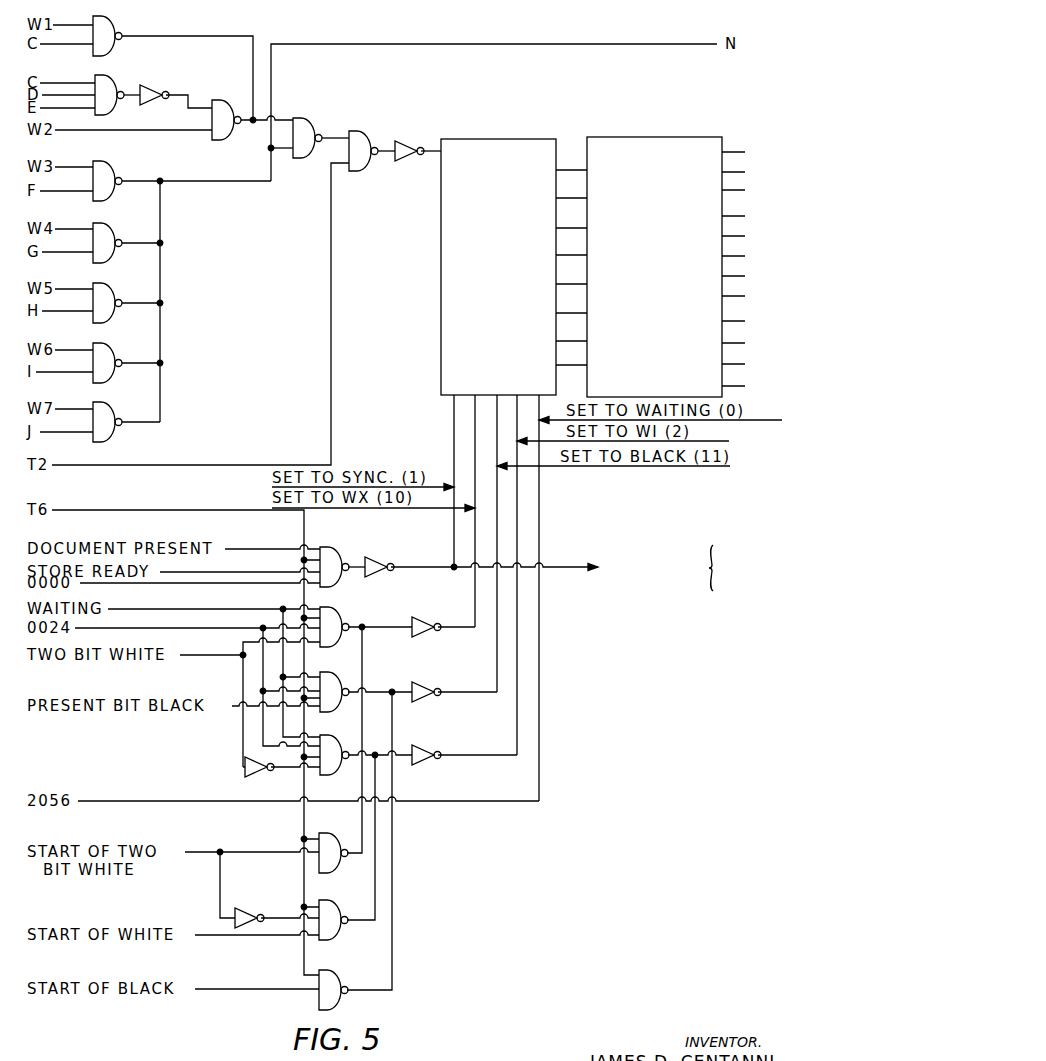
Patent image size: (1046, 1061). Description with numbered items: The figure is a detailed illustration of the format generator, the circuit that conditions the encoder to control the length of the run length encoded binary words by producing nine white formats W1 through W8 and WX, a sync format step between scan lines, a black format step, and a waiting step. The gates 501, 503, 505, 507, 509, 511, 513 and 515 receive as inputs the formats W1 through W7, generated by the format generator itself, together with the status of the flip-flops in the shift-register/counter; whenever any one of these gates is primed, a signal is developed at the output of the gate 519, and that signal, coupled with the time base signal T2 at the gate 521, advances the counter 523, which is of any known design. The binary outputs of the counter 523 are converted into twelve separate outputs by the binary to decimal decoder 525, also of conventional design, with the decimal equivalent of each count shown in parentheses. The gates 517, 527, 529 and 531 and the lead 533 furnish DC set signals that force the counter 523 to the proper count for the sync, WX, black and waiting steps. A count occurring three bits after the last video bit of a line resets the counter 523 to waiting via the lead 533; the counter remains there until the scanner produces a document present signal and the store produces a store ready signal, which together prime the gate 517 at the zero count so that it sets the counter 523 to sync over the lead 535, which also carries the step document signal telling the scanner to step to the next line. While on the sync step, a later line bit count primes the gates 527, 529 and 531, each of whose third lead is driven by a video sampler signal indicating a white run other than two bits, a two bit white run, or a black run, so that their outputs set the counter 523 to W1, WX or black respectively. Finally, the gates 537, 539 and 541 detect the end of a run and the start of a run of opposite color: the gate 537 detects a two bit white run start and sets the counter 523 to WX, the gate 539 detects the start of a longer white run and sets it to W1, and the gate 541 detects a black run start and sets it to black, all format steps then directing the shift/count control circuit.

The gate 501 is at (113, 19).
The gate 503 is at (228, 93).
The gate 505 is at (108, 78).
The gate 507 is at (113, 165).
The gate 509 is at (140, 210).
The gate 511 is at (108, 284).
The gate 513 is at (108, 344).
The gate 515 is at (108, 403).
The gate 517 is at (330, 550).
The gate 519 is at (302, 120).
The gate 521 is at (360, 132).
The counter 523 is at (492, 139).
The binary to decimal decoder 525 is at (647, 137).
The gate 527 is at (340, 722).
The gate 529 is at (335, 610).
The gate 531 is at (340, 658).
The lead 533 is at (430, 801).
The lead 535 is at (556, 567).
The gate 537 is at (340, 818).
The gate 539 is at (341, 886).
The gate 541 is at (330, 973).